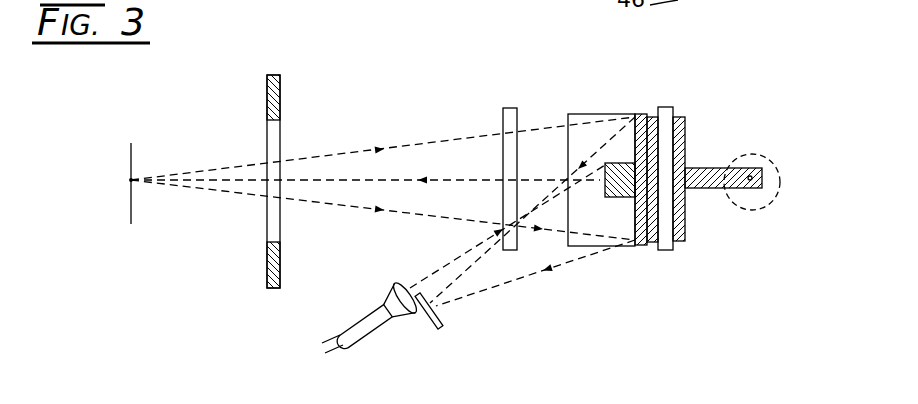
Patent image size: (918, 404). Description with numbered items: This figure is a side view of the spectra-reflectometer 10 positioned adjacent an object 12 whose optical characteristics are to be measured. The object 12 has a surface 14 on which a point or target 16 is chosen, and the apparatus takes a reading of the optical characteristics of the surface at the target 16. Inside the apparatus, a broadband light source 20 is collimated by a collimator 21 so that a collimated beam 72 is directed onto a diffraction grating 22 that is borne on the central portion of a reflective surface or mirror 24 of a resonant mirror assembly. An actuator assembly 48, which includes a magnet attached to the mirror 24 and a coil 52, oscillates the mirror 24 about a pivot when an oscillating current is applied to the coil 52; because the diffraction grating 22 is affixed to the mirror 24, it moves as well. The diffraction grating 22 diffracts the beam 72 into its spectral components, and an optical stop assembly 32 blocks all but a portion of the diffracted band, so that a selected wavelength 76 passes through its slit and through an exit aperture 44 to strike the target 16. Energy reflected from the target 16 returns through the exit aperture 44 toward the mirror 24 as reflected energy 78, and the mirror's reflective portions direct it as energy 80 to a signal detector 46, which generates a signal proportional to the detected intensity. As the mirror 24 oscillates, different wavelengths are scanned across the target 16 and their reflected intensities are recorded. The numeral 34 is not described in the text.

The spectra-reflectometer 10 is at (657, 345).
The object 12 is at (82, 177).
The surface 14 is at (131, 148).
The target 16 is at (131, 180).
The light source 20 is at (367, 337).
The collimator 21 is at (398, 283).
The diffraction grating 22 is at (622, 197).
The reflective surface 24 is at (636, 113).
The optical stop assembly 32 is at (510, 150).
The beam splitter plate 34 is at (510, 108).
The exit aperture 44 is at (262, 212).
The signal detector 46 is at (440, 326).
The actuator assembly 48 is at (757, 136).
The coil 52 is at (778, 164).
The collimated beam 72 is at (465, 249).
The selected wavelength 76 is at (483, 178).
The reflected energy 78 is at (367, 149).
The reflected energy directed to detector 80 is at (506, 284).